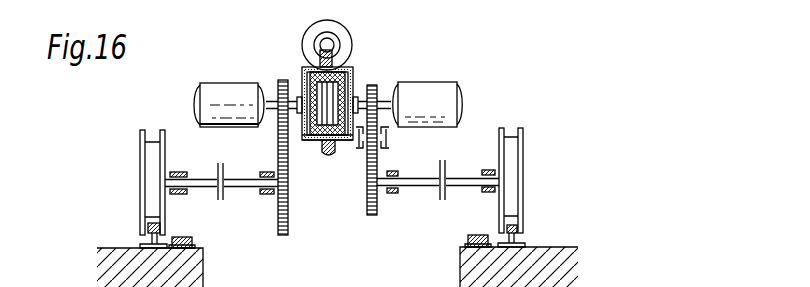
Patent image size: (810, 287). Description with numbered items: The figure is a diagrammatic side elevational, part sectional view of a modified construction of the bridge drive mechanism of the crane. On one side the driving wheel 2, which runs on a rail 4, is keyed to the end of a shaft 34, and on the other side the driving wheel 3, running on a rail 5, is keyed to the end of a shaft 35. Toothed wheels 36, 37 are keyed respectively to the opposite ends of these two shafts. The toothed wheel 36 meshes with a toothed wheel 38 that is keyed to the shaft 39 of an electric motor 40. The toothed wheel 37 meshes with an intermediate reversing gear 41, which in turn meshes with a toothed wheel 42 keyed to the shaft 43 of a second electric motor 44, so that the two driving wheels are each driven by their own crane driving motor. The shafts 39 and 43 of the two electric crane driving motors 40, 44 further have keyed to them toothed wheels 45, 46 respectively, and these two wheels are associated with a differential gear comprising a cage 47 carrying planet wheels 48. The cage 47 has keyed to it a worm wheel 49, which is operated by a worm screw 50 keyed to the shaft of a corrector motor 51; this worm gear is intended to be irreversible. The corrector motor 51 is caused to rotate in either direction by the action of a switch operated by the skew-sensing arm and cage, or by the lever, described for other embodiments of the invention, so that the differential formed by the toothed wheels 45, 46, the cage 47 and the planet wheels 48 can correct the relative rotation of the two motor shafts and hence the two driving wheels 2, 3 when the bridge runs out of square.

The driving wheel 2 is at (147, 192).
The driving wheel 3 is at (515, 182).
The rail 4 is at (148, 229).
The rail 5 is at (522, 242).
The shaft 34 is at (237, 182).
The shaft 35 is at (415, 184).
The toothed wheel 36 is at (290, 208).
The toothed wheel 37 is at (370, 198).
The toothed wheel 38 is at (278, 93).
The shaft 39 is at (276, 111).
The electric motor 40 is at (225, 92).
The intermediate reversing gear 41 is at (381, 150).
The toothed wheel 42 is at (378, 87).
The shaft 43 is at (383, 111).
The electric motor 44 is at (423, 90).
The toothed wheel 45 is at (302, 80).
The toothed wheel 46 is at (353, 78).
The cage 47 is at (303, 143).
The planet wheels 48 is at (337, 143).
The worm wheel 49 is at (337, 52).
The worm screw 50 is at (330, 44).
The corrector motor 51 is at (310, 38).